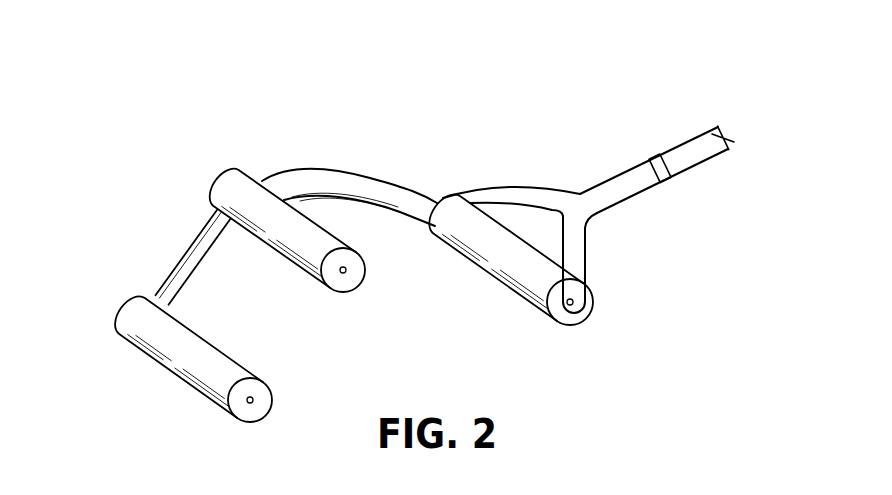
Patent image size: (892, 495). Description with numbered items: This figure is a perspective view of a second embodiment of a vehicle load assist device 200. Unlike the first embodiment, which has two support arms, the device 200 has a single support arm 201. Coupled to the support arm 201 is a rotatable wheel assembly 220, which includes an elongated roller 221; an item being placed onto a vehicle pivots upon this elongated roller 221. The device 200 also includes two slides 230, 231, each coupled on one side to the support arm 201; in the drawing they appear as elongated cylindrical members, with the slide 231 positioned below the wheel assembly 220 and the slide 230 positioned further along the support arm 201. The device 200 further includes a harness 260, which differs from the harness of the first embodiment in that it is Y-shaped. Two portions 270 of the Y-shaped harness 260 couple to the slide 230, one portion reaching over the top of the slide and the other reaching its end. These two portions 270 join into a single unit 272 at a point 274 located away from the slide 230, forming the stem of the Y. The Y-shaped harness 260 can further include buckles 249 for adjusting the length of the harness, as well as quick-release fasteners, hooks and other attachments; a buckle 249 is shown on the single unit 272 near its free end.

The vehicle load assist device 200 is at (367, 98).
The support arm 201 is at (397, 193).
The rotatable wheel assembly 220 is at (262, 158).
The elongated roller 221 is at (347, 284).
The slide 230 is at (492, 290).
The slide 231 is at (158, 378).
The buckle 249 is at (670, 174).
The harness 260 is at (623, 220).
The portions of the Y-shaped harness 270 is at (522, 178).
The single unit 272 is at (675, 143).
The point 274 is at (583, 187).